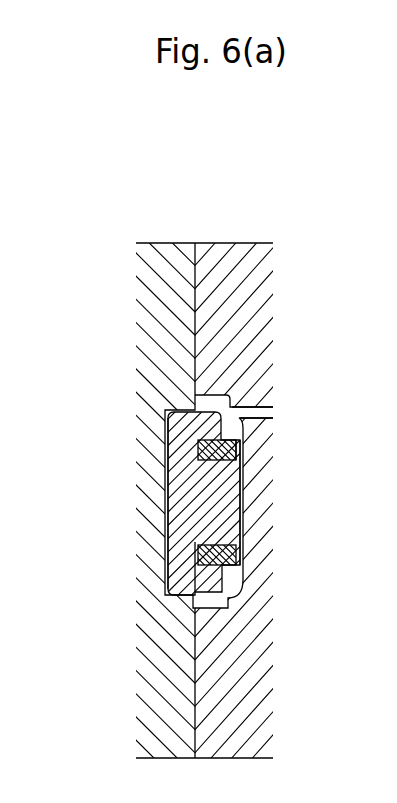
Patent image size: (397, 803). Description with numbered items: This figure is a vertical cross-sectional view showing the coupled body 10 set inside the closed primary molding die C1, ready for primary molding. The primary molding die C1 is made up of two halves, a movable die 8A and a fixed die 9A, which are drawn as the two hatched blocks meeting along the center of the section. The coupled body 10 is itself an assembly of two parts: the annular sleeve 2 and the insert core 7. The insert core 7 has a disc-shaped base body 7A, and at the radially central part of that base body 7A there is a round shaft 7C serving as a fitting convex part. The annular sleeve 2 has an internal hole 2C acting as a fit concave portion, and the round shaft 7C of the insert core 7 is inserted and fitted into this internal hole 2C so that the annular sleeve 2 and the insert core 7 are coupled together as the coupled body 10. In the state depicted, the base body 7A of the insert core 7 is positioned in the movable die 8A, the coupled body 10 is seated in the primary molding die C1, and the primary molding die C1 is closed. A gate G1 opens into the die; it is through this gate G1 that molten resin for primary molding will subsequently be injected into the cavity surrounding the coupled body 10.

The primary molding die C1 is at (308, 227).
The movable die 8A is at (163, 249).
The fixed die 9A is at (249, 249).
The gate G1 is at (276, 399).
The coupled body 10 is at (70, 420).
The annular sleeve 2 is at (187, 445).
The internal hole 2C is at (244, 465).
The insert core 7 is at (155, 492).
The base body 7A is at (166, 527).
The round shaft 7C is at (246, 503).